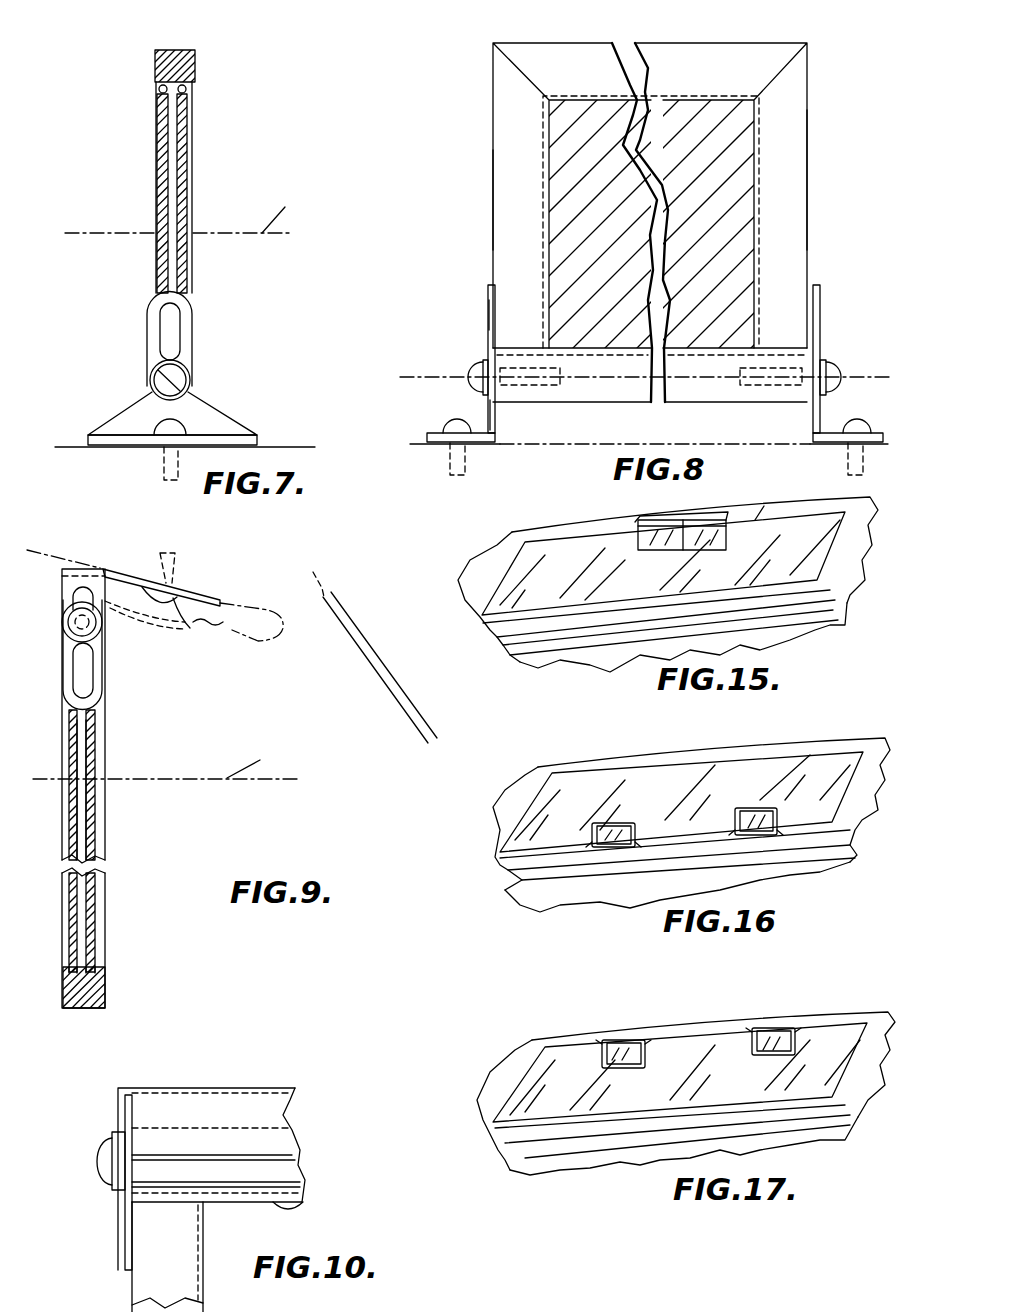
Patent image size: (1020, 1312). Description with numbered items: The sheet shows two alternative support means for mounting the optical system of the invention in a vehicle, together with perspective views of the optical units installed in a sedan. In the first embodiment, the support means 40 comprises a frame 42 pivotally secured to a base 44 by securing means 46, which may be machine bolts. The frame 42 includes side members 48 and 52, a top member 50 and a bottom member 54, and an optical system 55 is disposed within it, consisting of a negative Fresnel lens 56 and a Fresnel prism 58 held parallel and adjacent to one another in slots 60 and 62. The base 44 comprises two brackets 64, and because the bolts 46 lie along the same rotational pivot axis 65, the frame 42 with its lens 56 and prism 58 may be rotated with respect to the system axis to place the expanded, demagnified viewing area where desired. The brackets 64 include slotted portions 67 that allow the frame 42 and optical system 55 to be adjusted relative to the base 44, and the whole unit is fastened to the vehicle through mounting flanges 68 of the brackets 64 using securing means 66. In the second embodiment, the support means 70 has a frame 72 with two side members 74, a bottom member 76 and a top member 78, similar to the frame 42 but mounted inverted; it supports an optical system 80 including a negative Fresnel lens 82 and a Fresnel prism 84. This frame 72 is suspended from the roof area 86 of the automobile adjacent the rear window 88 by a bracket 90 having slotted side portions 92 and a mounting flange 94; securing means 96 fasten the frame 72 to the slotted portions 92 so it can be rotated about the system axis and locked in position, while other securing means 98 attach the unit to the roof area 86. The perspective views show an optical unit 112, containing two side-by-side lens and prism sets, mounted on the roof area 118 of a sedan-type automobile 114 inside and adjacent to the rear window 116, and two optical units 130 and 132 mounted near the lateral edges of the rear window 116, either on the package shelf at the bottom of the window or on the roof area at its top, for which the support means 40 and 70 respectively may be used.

In FIG. 7, the support means 40 is at (122, 72).
In FIG. 8, the support means 40 is at (460, 56).
In FIG. 7, the frame 42 is at (198, 70).
In FIG. 8, the frame 42 is at (583, 42).
In FIG. 7, the base 44 is at (185, 426).
In FIG. 8, the base 44 is at (487, 310).
In FIG. 7, the securing means 46 is at (192, 370).
In FIG. 8, the securing means 46 is at (472, 377).
In FIG. 8, the side member 48 is at (493, 160).
In FIG. 8, the top member 50 is at (700, 43).
In FIG. 8, the side member 52 is at (808, 125).
In FIG. 8, the bottom member 54 is at (688, 402).
In FIG. 7, the optical system 55 is at (190, 187).
In FIG. 8, the optical system 55 is at (658, 224).
In FIG. 7, the negative Fresnel lens 56 is at (162, 165).
In FIG. 7, the Fresnel prism 58 is at (186, 172).
In FIG. 7, the slot 60 is at (158, 92).
In FIG. 7, the slot 62 is at (187, 90).
In FIG. 7, the bracket 64 is at (173, 339).
In FIG. 8, the bracket 64 is at (498, 418).
In FIG. 8, the rotational pivot axis 65 is at (412, 380).
In FIG. 8, the securing means 66 is at (450, 432).
In FIG. 7, the slotted portion 67 is at (184, 332).
In FIG. 8, the slotted portion 67 is at (488, 335).
In FIG. 7, the mounting flange 68 is at (112, 435).
In FIG. 8, the mounting flange 68 is at (478, 433).
In FIG. 9, the support means 70 is at (134, 950).
In FIG. 9, the frame 72 is at (97, 1012).
In FIG. 9, the side member 74 is at (107, 745).
In FIG. 10, the side member 74 is at (132, 1287).
In FIG. 9, the bottom member 76 is at (68, 975).
In FIG. 9, the top member 78 is at (107, 607).
In FIG. 10, the top member 78 is at (286, 1203).
In FIG. 9, the optical system 80 is at (98, 937).
In FIG. 9, the negative Fresnel lens 82 is at (72, 913).
In FIG. 9, the Fresnel prism 84 is at (93, 900).
In FIG. 9, the roof area 86 is at (248, 612).
In FIG. 9, the rear window 88 is at (345, 630).
In FIG. 9, the bracket 90 is at (60, 584).
In FIG. 10, the bracket 90 is at (242, 1088).
In FIG. 9, the slotted side portion 92 is at (65, 662).
In FIG. 10, the slotted side portion 92 is at (118, 1207).
In FIG. 9, the mounting flange 94 is at (166, 585).
In FIG. 10, the mounting flange 94 is at (232, 1148).
In FIG. 9, the securing means 96 is at (96, 640).
In FIG. 10, the securing means 96 is at (105, 1155).
In FIG. 9, the securing means 98 is at (198, 627).
In FIG. 15, the optical unit 112 is at (638, 555).
In FIG. 15, the automobile of the sedan type 114 is at (662, 584).
In FIG. 16, the automobile of the sedan type 114 is at (691, 819).
In FIG. 17, the automobile of the sedan type 114 is at (685, 1086).
In FIG. 15, the rear window 116 is at (803, 551).
In FIG. 16, the rear window 116 is at (706, 786).
In FIG. 17, the rear window 116 is at (708, 1082).
In FIG. 15, the roof area 118 is at (747, 527).
In FIG. 16, the optical unit 130 is at (768, 810).
In FIG. 17, the optical unit 130 is at (780, 1058).
In FIG. 16, the optical unit 132 is at (612, 822).
In FIG. 17, the optical unit 132 is at (620, 1068).